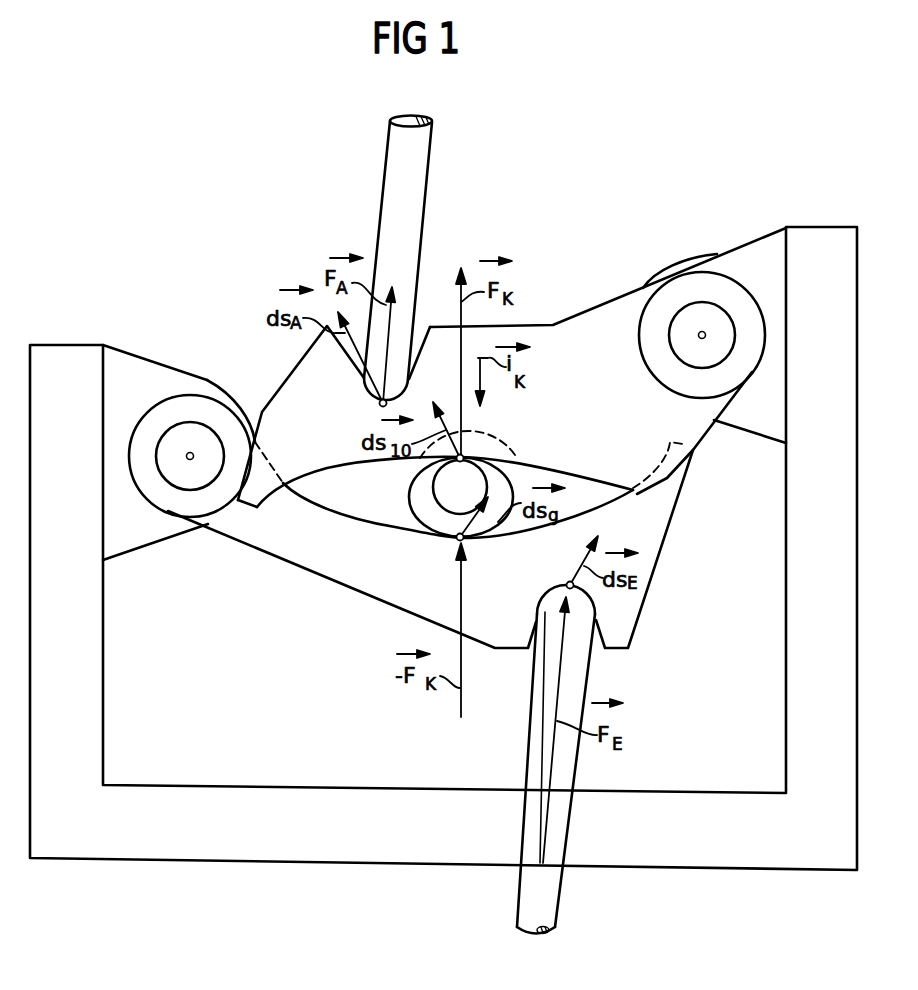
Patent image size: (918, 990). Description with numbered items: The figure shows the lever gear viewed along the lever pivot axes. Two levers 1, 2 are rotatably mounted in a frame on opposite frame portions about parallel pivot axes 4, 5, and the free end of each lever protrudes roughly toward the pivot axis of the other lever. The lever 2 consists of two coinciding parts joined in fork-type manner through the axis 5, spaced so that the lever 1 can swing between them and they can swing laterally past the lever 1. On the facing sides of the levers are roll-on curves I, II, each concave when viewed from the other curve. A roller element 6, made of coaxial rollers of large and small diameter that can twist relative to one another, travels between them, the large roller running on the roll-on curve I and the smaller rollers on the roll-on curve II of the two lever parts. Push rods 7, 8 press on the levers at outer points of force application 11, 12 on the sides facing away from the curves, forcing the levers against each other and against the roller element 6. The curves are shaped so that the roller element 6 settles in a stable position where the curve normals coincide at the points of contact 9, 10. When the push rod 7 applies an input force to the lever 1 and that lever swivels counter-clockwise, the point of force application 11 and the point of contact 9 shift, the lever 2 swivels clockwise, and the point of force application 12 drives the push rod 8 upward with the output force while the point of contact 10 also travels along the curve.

The lever 1 is at (663, 507).
The lever 2 is at (297, 380).
The pivot axis 4 is at (190, 455).
The pivot axis 5 is at (702, 333).
The roller element 6 is at (420, 490).
The push rod 7 is at (548, 896).
The push rod 8 is at (418, 176).
The point of contact 9 is at (460, 538).
The point of contact 10 is at (480, 448).
The point of force application 11 is at (570, 584).
The point of force application 12 is at (380, 404).
The roll-on curve I is at (374, 521).
The roll-on curve II is at (574, 479).